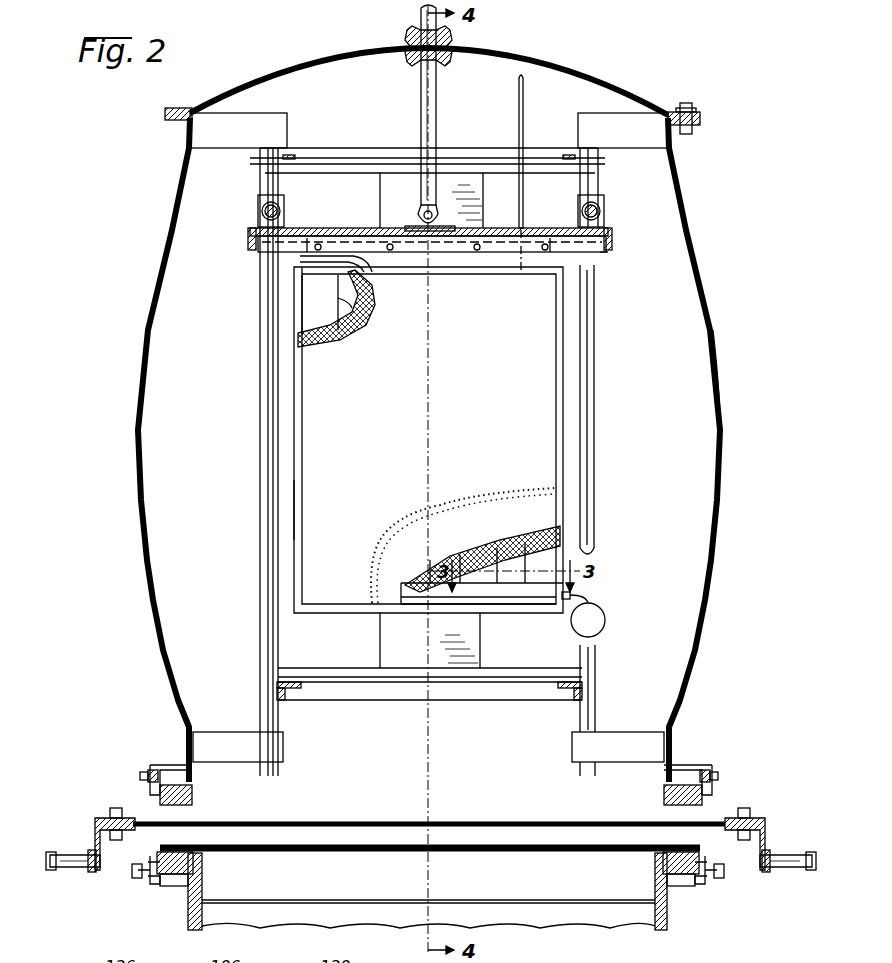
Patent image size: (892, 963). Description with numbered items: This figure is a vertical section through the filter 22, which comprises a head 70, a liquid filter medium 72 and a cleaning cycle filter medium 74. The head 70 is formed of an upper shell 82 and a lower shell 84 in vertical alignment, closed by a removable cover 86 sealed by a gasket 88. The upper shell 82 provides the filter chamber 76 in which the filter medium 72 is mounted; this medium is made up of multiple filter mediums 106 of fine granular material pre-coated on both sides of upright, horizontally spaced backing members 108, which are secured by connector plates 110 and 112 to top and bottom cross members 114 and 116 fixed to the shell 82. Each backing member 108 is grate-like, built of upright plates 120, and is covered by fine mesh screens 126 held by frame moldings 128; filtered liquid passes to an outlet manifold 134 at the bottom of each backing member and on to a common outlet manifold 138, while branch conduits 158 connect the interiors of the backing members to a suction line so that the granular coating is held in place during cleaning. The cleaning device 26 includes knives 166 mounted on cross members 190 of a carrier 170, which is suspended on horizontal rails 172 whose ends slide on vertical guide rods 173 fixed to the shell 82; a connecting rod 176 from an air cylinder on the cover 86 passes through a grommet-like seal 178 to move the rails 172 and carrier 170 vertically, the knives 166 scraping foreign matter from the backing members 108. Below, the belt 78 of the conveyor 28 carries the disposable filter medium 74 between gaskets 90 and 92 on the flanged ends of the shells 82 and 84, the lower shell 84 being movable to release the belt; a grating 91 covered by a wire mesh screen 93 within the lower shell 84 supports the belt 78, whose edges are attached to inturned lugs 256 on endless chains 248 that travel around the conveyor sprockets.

The filter 22 is at (655, 82).
The cleaning device 26 is at (605, 257).
The conveyor 28 is at (760, 817).
The head 70 is at (716, 272).
The liquid filter medium 72 is at (296, 505).
The cleaning cycle filter medium 74 is at (418, 822).
The filter chamber 76 is at (635, 421).
The belt 78 is at (512, 828).
The upper shell 82 is at (722, 348).
The lower shell 84 is at (672, 925).
The cover 86 is at (552, 62).
The gasket 88 is at (700, 119).
The gasket 90 is at (193, 797).
The grating 91 is at (560, 903).
The gasket 92 is at (188, 852).
The wire mesh screen 93 is at (556, 853).
The filter mediums 106 is at (425, 399).
The backing members 108 is at (297, 268).
The connector plate 110 is at (382, 197).
The connector plate 112 is at (380, 645).
The top cross member 114 is at (360, 165).
The bottom cross member 116 is at (350, 688).
The upright plates 120 is at (364, 300).
The fine mesh screens 126 is at (410, 522).
The frame moldings 128 is at (304, 452).
The outlet manifold 134 is at (520, 606).
The common outlet manifold 138 is at (592, 618).
The branch conduits 158 is at (523, 100).
The knives 166 is at (500, 254).
The carrier 170 is at (256, 232).
The rails 172 is at (262, 208).
The vertical guide rods 173 is at (264, 394).
The connecting rod 176 is at (437, 112).
The grommet-like seal 178 is at (410, 36).
The cross members 190 is at (410, 254).
The endless chains 248 is at (72, 856).
The inturned lugs 256 is at (128, 848).